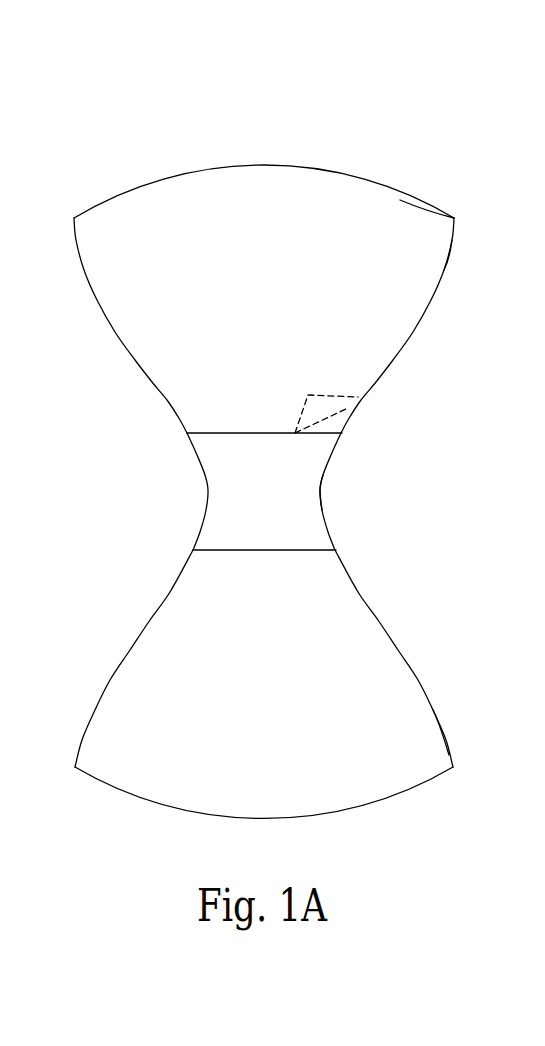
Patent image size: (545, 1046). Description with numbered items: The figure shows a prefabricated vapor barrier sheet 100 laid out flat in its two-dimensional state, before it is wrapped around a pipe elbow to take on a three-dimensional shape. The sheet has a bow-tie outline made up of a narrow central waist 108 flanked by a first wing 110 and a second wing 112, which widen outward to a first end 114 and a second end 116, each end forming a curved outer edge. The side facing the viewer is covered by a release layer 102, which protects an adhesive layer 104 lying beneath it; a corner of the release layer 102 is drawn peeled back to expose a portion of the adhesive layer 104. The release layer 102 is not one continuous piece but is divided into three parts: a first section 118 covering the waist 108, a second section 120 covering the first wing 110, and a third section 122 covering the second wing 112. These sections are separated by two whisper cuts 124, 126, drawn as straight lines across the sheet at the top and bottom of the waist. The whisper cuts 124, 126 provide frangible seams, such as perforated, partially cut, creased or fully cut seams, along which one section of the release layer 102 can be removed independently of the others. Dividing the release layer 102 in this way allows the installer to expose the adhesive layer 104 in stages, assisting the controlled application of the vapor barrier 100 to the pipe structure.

The vapor barrier sheet 100 is at (372, 183).
The release layer 102 is at (277, 280).
The adhesive layer 104 is at (343, 424).
The waist 108 is at (322, 520).
The first wing 110 is at (398, 306).
The second wing 112 is at (392, 652).
The first end 114 is at (413, 223).
The second end 116 is at (410, 787).
The first section of release layer 118 is at (305, 497).
The second section of release layer 120 is at (435, 253).
The third section of release layer 122 is at (430, 706).
The whisper cut 124 is at (187, 435).
The whisper cut 126 is at (193, 552).